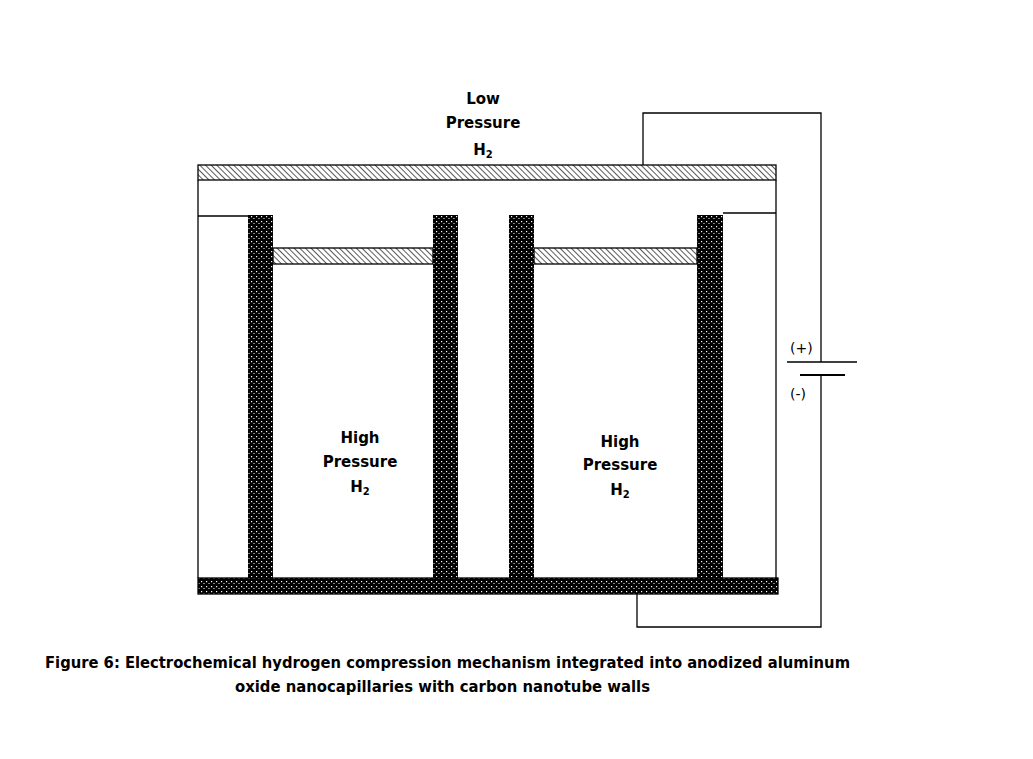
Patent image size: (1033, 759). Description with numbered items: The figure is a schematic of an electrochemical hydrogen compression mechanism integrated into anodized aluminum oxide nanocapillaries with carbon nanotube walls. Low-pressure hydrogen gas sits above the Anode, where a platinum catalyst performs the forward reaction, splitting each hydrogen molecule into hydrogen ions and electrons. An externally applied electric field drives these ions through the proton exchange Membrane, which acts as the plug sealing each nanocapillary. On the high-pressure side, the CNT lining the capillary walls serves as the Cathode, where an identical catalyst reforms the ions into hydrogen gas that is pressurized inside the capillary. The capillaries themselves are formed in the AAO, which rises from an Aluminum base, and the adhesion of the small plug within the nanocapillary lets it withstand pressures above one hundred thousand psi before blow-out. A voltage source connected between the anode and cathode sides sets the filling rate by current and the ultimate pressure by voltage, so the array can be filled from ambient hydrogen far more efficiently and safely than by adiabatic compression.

The anode Anode is at (209, 176).
The proton exchange membrane Membrane is at (280, 203).
The cathode Cathode is at (290, 258).
The AAO nanocapillary AAO is at (214, 383).
The carbon nanotube wall CNT is at (258, 493).
The aluminum Aluminum is at (222, 581).